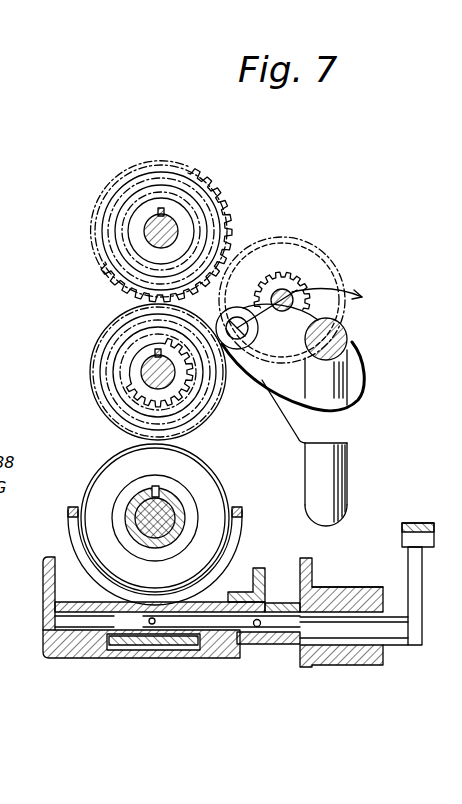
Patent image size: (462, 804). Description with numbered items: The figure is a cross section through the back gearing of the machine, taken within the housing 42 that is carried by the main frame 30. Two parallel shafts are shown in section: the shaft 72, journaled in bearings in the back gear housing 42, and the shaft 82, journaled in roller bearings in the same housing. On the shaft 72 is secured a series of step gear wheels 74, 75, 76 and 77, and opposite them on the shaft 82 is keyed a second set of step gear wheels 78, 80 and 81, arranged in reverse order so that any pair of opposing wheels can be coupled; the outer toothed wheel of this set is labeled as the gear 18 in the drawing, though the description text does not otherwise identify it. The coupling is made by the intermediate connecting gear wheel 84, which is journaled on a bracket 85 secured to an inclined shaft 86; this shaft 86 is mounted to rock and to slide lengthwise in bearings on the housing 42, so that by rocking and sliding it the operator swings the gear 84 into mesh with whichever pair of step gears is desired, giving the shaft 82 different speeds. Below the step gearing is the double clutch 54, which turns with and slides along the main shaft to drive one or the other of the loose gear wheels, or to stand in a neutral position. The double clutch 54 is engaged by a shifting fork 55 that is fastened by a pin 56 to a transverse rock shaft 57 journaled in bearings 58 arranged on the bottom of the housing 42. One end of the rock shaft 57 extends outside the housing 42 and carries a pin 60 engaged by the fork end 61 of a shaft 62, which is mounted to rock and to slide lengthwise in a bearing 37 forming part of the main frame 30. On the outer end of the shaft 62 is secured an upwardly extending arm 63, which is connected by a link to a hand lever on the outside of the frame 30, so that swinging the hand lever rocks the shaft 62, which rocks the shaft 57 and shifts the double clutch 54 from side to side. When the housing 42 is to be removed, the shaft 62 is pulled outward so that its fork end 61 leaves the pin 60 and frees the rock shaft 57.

The gear wheel 18 is at (212, 188).
The step gear wheel 78 is at (167, 175).
The step gear wheel 80 is at (142, 192).
The step gear wheel 81 is at (133, 202).
The shaft 82 is at (143, 228).
The shaft 72 is at (140, 372).
The step gear wheel 74 is at (138, 397).
The step gear wheel 75 is at (122, 390).
The step gear wheel 76 is at (110, 352).
The step gear wheel 77 is at (112, 327).
The intermediate connecting gear wheel 84 is at (251, 289).
The bracket 85 is at (272, 356).
The inclined shaft 86 is at (347, 474).
The double clutch 54 is at (198, 482).
The shifting fork 55 is at (244, 541).
The housing 42 is at (43, 579).
The bearings 58 is at (45, 641).
The rock shaft 57 is at (70, 616).
The fork end 61 is at (262, 612).
The pin 56 is at (149, 621).
The pin 60 is at (257, 627).
The main frame 30 is at (309, 564).
The bearing 37 is at (353, 587).
The shaft 62 is at (388, 630).
The arm 63 is at (422, 586).